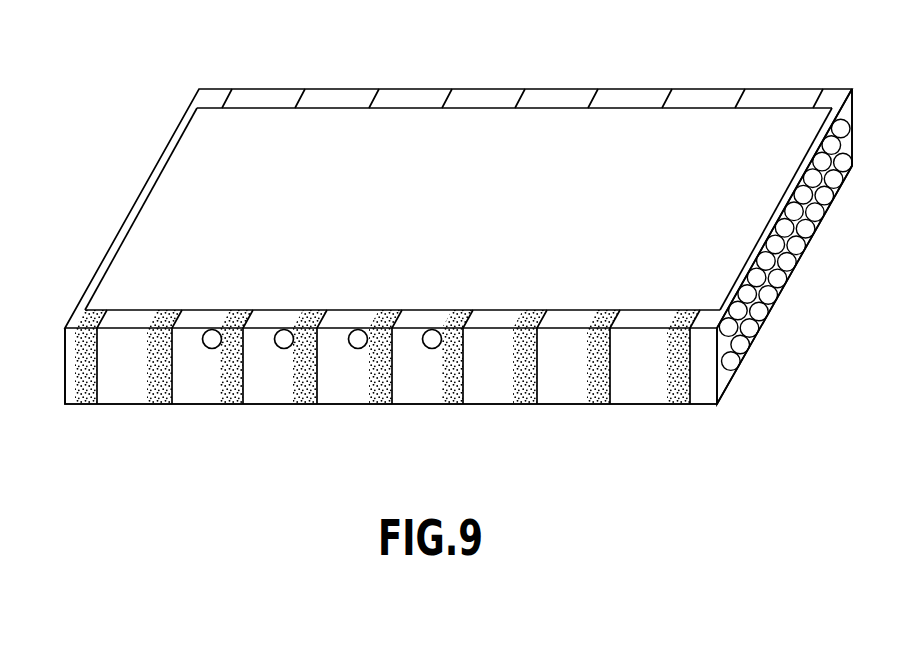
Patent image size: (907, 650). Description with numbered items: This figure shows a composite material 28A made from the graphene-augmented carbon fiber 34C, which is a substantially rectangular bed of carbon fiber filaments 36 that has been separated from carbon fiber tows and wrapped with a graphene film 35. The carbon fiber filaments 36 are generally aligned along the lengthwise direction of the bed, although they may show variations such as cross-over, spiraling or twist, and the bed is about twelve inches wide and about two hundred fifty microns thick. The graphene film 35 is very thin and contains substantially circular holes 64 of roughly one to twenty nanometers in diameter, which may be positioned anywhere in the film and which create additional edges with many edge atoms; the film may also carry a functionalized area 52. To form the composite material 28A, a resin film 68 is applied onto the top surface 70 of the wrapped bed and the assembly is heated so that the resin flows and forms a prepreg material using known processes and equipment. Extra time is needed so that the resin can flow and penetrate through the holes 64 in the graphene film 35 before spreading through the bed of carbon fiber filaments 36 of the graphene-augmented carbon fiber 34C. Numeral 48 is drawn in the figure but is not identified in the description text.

The composite material 28A is at (166, 56).
The resin film 68 is at (692, 118).
The graphene-augmented bed of carbon fiber filaments 34C is at (113, 243).
The top surface 70 is at (103, 266).
The graphene film 35 is at (68, 373).
The holes 64 is at (283, 348).
The channel cell 48 is at (572, 357).
The functionalized area 52 is at (600, 360).
The carbon fiber filaments 36 is at (795, 268).